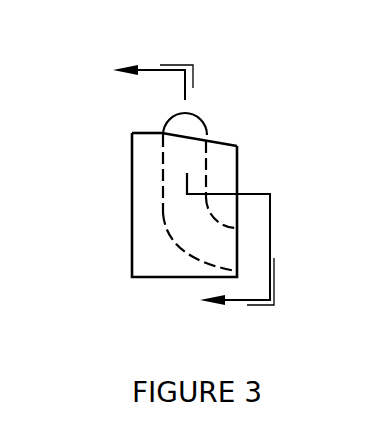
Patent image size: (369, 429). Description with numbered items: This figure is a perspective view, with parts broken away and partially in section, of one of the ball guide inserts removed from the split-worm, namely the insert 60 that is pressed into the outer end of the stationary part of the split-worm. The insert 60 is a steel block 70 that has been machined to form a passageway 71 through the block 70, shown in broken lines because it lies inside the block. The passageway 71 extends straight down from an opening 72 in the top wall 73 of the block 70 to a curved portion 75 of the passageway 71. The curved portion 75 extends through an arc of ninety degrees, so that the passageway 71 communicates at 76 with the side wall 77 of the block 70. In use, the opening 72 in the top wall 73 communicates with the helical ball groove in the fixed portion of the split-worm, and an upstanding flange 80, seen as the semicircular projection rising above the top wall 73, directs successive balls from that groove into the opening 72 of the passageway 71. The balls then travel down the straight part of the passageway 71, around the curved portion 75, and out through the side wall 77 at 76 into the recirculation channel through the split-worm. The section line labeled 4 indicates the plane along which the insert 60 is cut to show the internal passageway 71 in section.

The section line 4- 4 is at (193, 183).
The ball guide insert 60 is at (251, 141).
The steel block 70 is at (137, 196).
The passageway 71 is at (163, 213).
The opening 72 is at (162, 133).
The top wall 73 is at (135, 134).
The curved portion 75 is at (182, 248).
The communication point 76 is at (237, 247).
The side wall 77 is at (237, 177).
The upstanding flange 80 is at (188, 130).